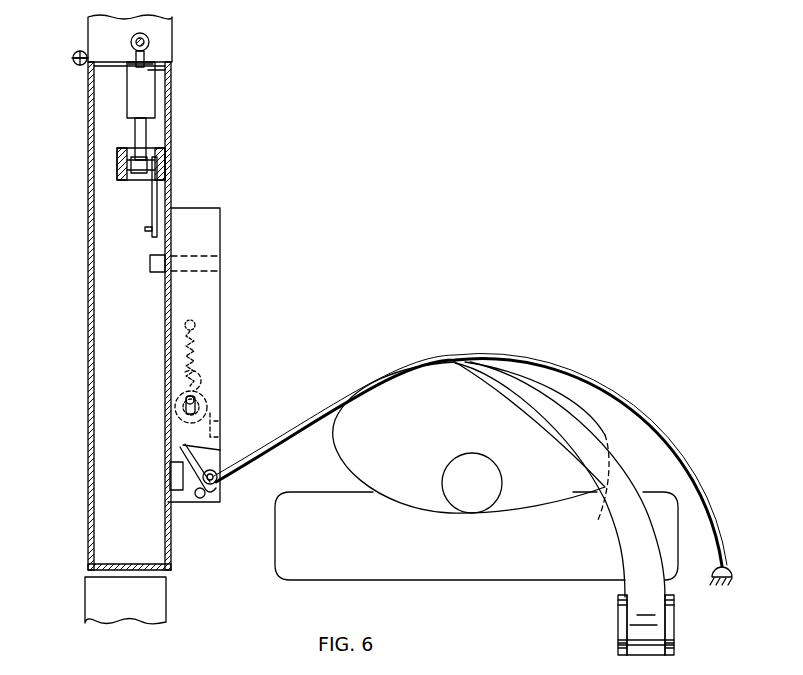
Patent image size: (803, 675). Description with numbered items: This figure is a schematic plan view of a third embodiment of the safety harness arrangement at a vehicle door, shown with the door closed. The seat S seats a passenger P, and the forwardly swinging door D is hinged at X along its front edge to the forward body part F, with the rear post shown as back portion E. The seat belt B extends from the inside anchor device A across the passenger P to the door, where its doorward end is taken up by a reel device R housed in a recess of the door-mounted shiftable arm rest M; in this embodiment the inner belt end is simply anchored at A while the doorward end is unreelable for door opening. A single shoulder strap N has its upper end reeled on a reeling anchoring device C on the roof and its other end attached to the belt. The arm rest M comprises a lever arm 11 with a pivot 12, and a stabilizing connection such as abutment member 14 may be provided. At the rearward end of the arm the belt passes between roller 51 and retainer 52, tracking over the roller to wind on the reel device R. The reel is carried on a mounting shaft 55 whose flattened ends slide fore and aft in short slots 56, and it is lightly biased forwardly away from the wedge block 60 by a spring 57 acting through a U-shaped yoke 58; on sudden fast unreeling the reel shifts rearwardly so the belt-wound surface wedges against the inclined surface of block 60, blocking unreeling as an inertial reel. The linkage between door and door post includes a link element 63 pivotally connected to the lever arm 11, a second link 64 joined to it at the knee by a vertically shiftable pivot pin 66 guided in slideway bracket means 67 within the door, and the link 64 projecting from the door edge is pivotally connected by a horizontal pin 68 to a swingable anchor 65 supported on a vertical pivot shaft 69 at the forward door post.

The lever arm 11 is at (147, 231).
The pivot 12 is at (150, 264).
The abutment member 14 is at (170, 479).
The roller 51 is at (218, 478).
The retainer 52 is at (200, 498).
The mounting rod or shaft 55 is at (180, 410).
The slots 56 is at (186, 398).
The spring 57 is at (203, 338).
The U-shaped yoke 58 is at (196, 374).
The wedge block 60 is at (222, 425).
The link element 63 is at (152, 198).
The second link 64 is at (155, 97).
The swingable anchor 65 is at (150, 44).
The pivot pin 66 is at (127, 147).
The slideway bracket means 67 is at (118, 170).
The horizontal pin 68 is at (174, 76).
The vertical pivot shaft 69 is at (148, 38).
The forward part of vehicle body F is at (88, 28).
The hinge X is at (72, 58).
The door D is at (86, 467).
The back portion E is at (85, 598).
The arm rest M is at (224, 271).
The reel device R is at (206, 388).
The seat belt B is at (411, 364).
The passenger P is at (577, 404).
The seat S is at (520, 553).
The shoulder strap N is at (657, 583).
The reeling anchoring device C is at (618, 622).
The anchor device A is at (720, 572).